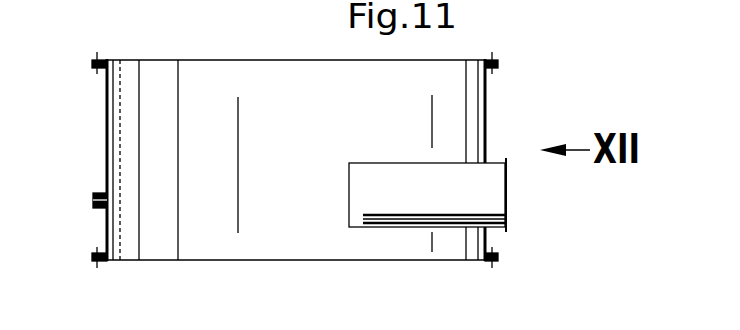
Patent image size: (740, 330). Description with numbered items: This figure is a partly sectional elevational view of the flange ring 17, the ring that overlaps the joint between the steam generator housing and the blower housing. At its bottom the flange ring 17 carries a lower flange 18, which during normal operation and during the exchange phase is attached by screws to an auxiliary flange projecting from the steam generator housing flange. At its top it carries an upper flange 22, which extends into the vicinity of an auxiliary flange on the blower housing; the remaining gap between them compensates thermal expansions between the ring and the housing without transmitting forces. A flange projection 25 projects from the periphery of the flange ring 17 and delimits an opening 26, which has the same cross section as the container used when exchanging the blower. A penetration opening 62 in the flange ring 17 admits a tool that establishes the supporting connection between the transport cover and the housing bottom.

The flange ring 17 is at (112, 125).
The upper flange 22 is at (499, 63).
The lower flange 18 is at (499, 258).
The penetration opening 62 is at (95, 205).
The opening 26 is at (493, 183).
The flange projection 25 is at (492, 158).